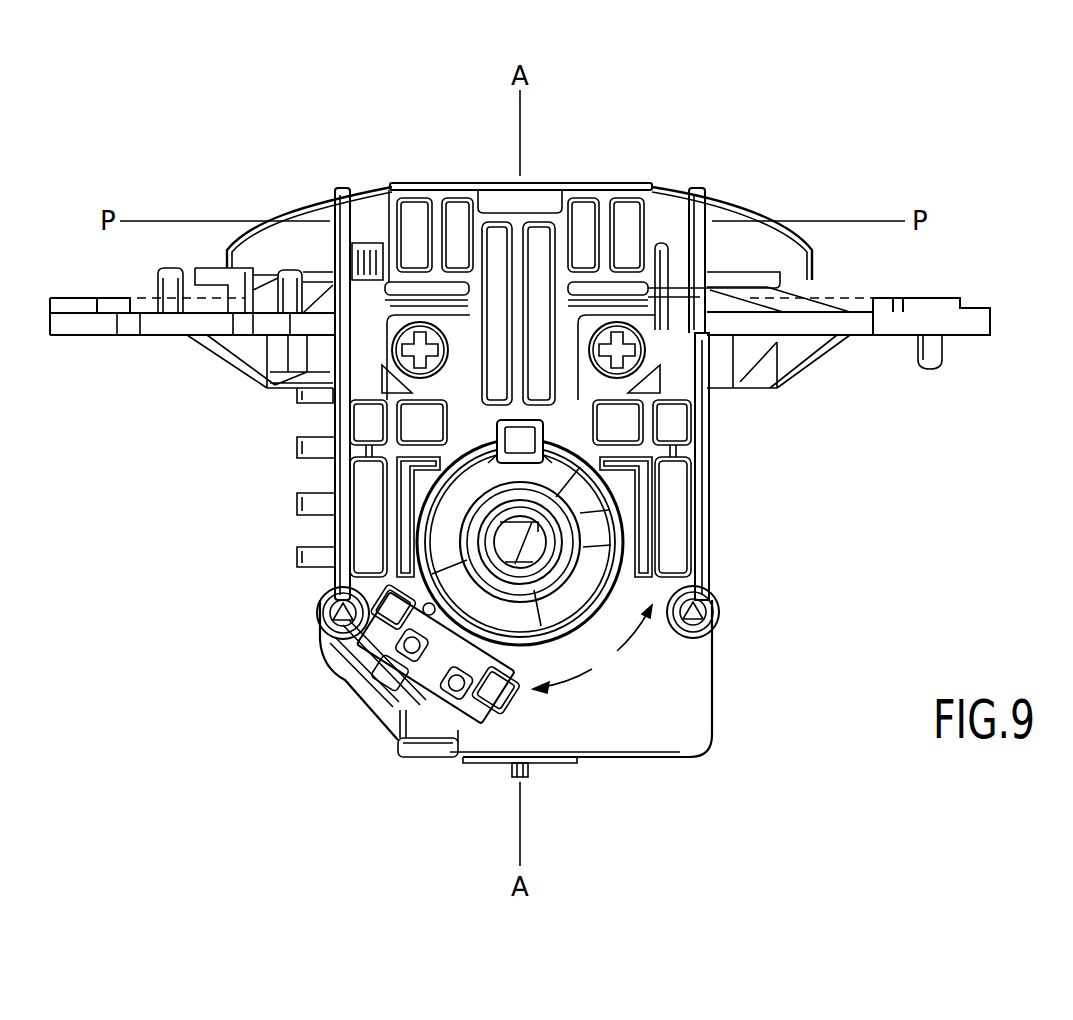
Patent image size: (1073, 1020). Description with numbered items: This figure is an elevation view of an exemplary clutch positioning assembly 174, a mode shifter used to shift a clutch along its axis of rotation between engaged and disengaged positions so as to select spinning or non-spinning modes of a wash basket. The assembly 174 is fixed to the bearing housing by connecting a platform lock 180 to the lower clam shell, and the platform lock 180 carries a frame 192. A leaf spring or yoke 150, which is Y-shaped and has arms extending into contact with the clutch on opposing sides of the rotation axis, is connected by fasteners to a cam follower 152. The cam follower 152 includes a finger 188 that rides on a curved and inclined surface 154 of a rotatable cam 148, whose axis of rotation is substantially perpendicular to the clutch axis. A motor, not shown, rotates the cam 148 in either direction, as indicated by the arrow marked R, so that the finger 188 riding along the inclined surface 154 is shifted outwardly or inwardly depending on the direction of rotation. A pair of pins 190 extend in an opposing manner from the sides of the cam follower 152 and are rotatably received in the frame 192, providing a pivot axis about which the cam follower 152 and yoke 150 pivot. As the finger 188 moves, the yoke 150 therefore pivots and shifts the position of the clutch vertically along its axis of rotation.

The rotatable cam 148 is at (447, 529).
The yoke 150 is at (742, 203).
The cam follower 152 is at (580, 197).
The curved and inclined surface 154 is at (566, 591).
The clutch positioning assembly 174 is at (884, 139).
The platform lock 180 is at (930, 305).
The finger 188 is at (445, 472).
The pins 190 is at (368, 214).
The frame 192 is at (698, 452).